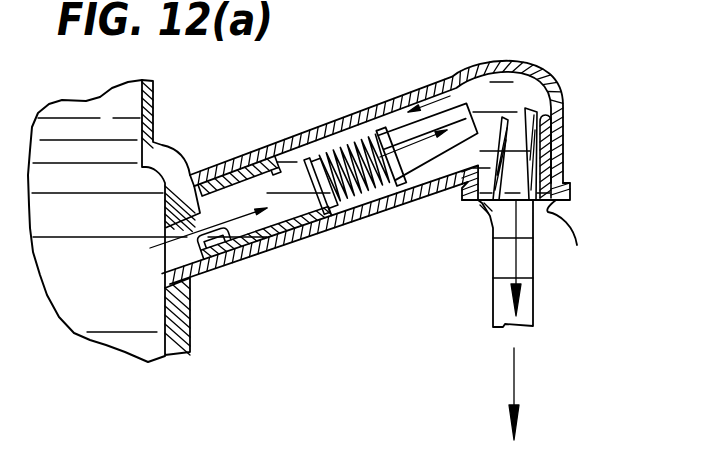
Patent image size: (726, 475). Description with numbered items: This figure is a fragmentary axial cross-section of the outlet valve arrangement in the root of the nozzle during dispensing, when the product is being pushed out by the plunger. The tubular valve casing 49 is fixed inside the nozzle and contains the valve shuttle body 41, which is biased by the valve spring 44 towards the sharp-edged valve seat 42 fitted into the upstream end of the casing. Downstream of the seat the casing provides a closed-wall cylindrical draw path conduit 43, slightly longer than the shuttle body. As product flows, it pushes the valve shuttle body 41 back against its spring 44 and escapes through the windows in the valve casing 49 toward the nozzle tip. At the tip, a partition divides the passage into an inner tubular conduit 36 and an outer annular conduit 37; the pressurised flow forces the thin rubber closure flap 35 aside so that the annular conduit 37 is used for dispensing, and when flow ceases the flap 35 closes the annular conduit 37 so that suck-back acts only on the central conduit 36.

The rubber closure flap 35 is at (577, 245).
The inner tubular conduit 36 is at (520, 164).
The outer annular conduit 37 is at (541, 186).
The valve shuttle body 41 is at (390, 147).
The valve seat 42 is at (200, 250).
The draw path conduit 43 is at (240, 176).
The valve spring 44 is at (379, 187).
The valve casing 49 is at (314, 240).